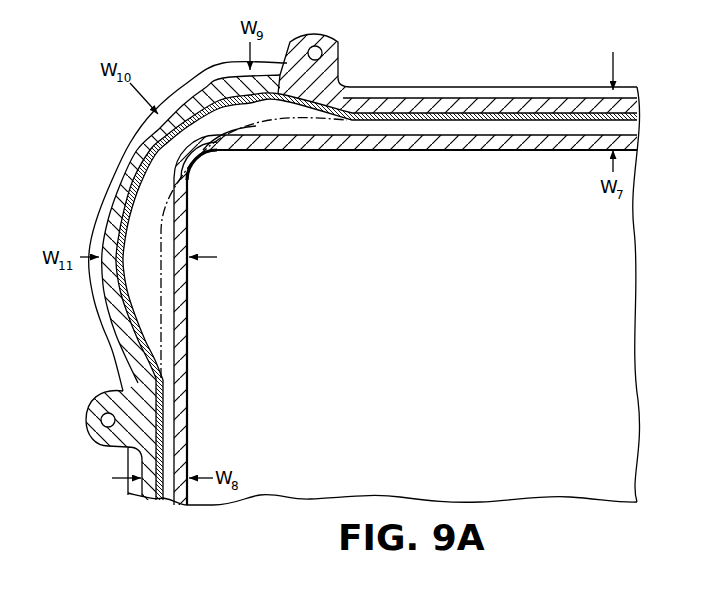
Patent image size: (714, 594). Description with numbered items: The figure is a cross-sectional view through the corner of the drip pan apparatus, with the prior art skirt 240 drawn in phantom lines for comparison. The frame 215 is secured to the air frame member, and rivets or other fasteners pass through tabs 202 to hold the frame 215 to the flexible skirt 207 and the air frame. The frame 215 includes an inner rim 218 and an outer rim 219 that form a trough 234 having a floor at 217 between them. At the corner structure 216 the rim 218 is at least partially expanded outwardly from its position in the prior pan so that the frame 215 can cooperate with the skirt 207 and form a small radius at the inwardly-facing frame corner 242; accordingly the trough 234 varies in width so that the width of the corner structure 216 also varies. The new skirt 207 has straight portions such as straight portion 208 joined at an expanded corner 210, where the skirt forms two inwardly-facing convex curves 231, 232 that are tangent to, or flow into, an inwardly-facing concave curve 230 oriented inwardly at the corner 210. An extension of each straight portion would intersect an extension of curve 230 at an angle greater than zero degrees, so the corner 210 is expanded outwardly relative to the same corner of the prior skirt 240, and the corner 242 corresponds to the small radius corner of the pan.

The tab 202 is at (342, 64).
The flexible skirt 207 is at (127, 206).
The straight portion 208 is at (438, 121).
The expanded corner 210 is at (148, 203).
The frame 215 is at (547, 95).
The corner structure 216 is at (120, 116).
The floor 217 is at (504, 131).
The inner rim 218 is at (553, 143).
The outer rim 219 is at (580, 106).
The inwardly-facing concave curve 230 is at (125, 260).
The inwardly-facing convex curve 231 is at (162, 379).
The inwardly-facing convex curve 232 is at (354, 122).
The trough 234 is at (630, 128).
The prior art skirt 240 is at (258, 120).
The inwardly-facing frame corner 242 is at (207, 157).